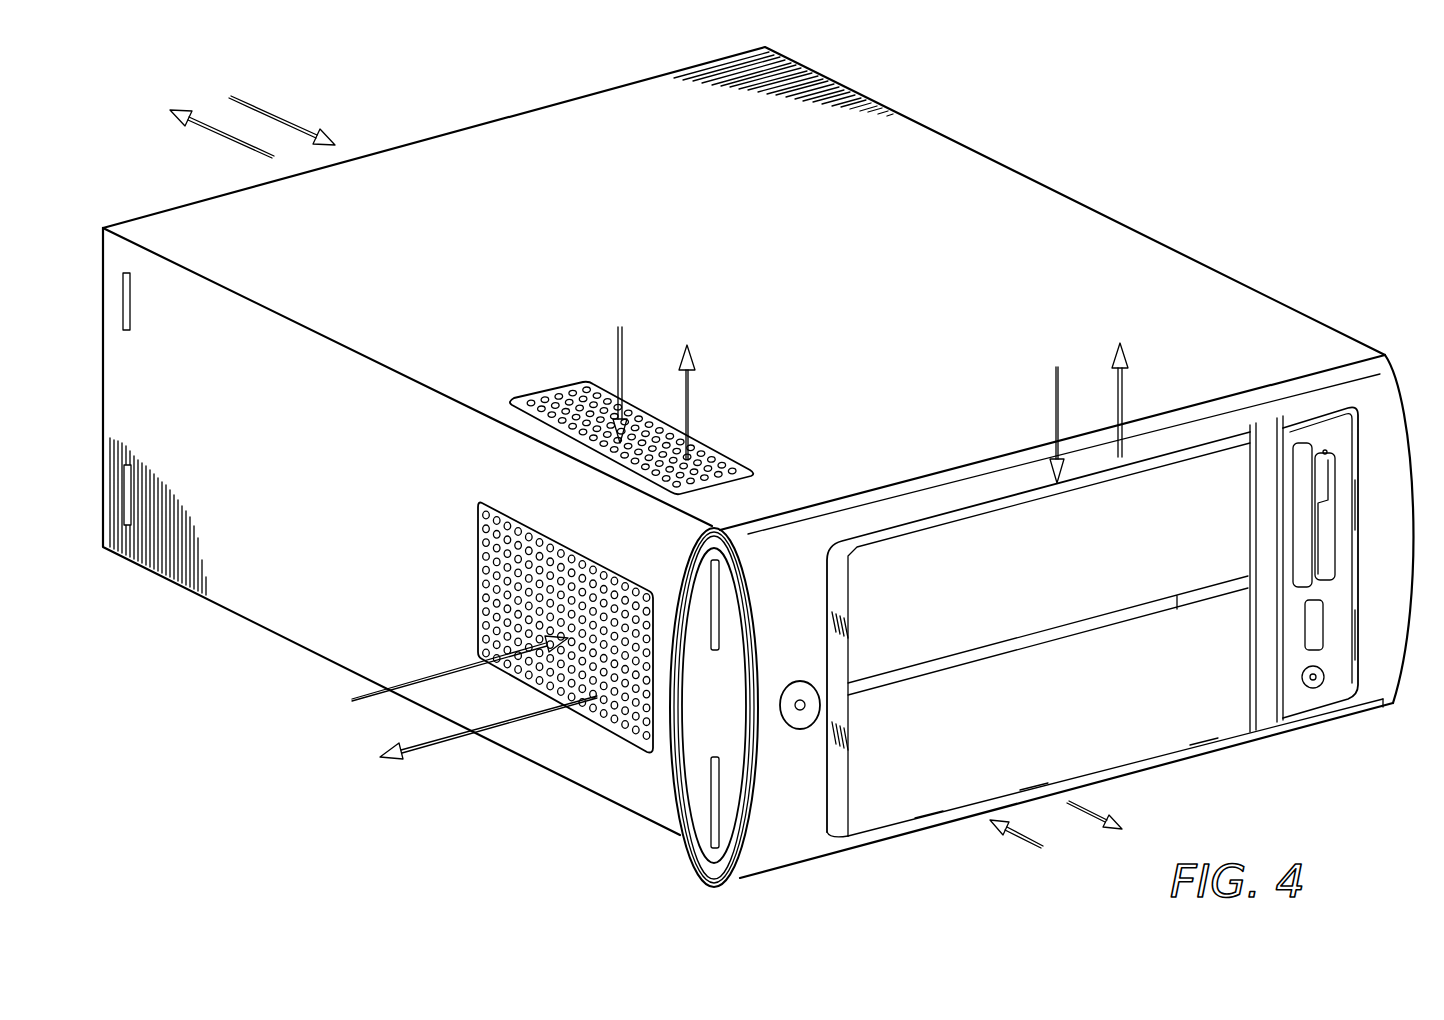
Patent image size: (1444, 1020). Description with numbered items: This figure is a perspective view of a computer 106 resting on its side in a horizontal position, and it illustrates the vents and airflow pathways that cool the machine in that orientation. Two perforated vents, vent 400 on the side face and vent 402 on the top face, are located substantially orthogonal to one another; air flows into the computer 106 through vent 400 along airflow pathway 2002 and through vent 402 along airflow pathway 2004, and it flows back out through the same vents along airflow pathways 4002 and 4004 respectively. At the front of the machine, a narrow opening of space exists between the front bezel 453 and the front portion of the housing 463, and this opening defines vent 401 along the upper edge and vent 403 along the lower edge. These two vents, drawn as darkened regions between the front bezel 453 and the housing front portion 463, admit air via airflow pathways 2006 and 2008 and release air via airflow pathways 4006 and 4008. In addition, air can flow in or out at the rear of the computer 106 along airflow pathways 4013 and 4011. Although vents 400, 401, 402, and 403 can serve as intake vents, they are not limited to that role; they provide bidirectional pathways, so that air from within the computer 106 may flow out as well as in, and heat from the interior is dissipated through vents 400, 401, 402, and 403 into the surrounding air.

The computer 106 is at (1060, 200).
The vent 400 is at (583, 720).
The vent 401 is at (1233, 425).
The vent 402 is at (548, 400).
The vent 403 is at (1190, 762).
The front bezel 453 is at (890, 795).
The front portion of the housing 463 is at (797, 822).
The airflow pathway 2002 is at (383, 700).
The airflow pathway 4002 is at (452, 755).
The airflow pathway 2004 is at (617, 355).
The airflow pathway 4004 is at (692, 407).
The airflow pathway 2006 is at (1055, 395).
The airflow pathway 4006 is at (1122, 397).
The airflow pathway 2008 is at (1025, 840).
The airflow pathway 4008 is at (1095, 818).
The airflow pathway 4011 is at (230, 140).
The airflow pathway 4013 is at (270, 118).